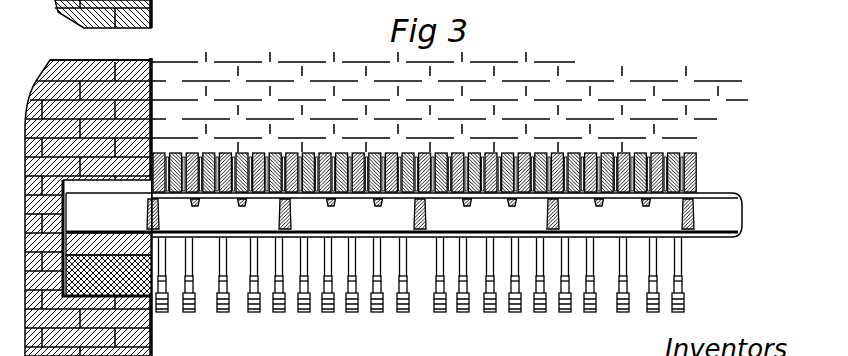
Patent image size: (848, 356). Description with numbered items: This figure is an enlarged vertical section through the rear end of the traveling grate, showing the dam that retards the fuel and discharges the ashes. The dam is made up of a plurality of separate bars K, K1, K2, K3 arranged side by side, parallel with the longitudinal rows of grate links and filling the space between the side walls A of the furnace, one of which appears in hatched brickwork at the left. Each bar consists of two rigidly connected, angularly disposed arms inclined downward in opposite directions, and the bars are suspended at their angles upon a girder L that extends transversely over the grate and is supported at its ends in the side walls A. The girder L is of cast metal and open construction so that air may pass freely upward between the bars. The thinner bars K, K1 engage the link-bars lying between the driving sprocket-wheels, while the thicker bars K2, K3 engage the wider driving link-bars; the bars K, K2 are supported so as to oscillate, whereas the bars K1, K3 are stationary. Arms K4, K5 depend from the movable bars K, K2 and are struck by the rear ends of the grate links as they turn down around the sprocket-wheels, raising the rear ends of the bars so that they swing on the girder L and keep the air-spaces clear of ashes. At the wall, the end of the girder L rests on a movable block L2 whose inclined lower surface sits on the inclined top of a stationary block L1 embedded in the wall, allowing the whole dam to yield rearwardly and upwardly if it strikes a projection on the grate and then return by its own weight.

The side wall A is at (100, 27).
The movable dam bar K is at (380, 152).
The stationary dam bar K1 is at (527, 152).
The movable dam bar K2 is at (630, 152).
The stationary dam bar K3 is at (603, 152).
The depending arm K4 is at (534, 313).
The depending arm K5 is at (625, 313).
The girder L is at (404, 215).
The stationary block L1 is at (108, 275).
The movable block L2 is at (94, 214).